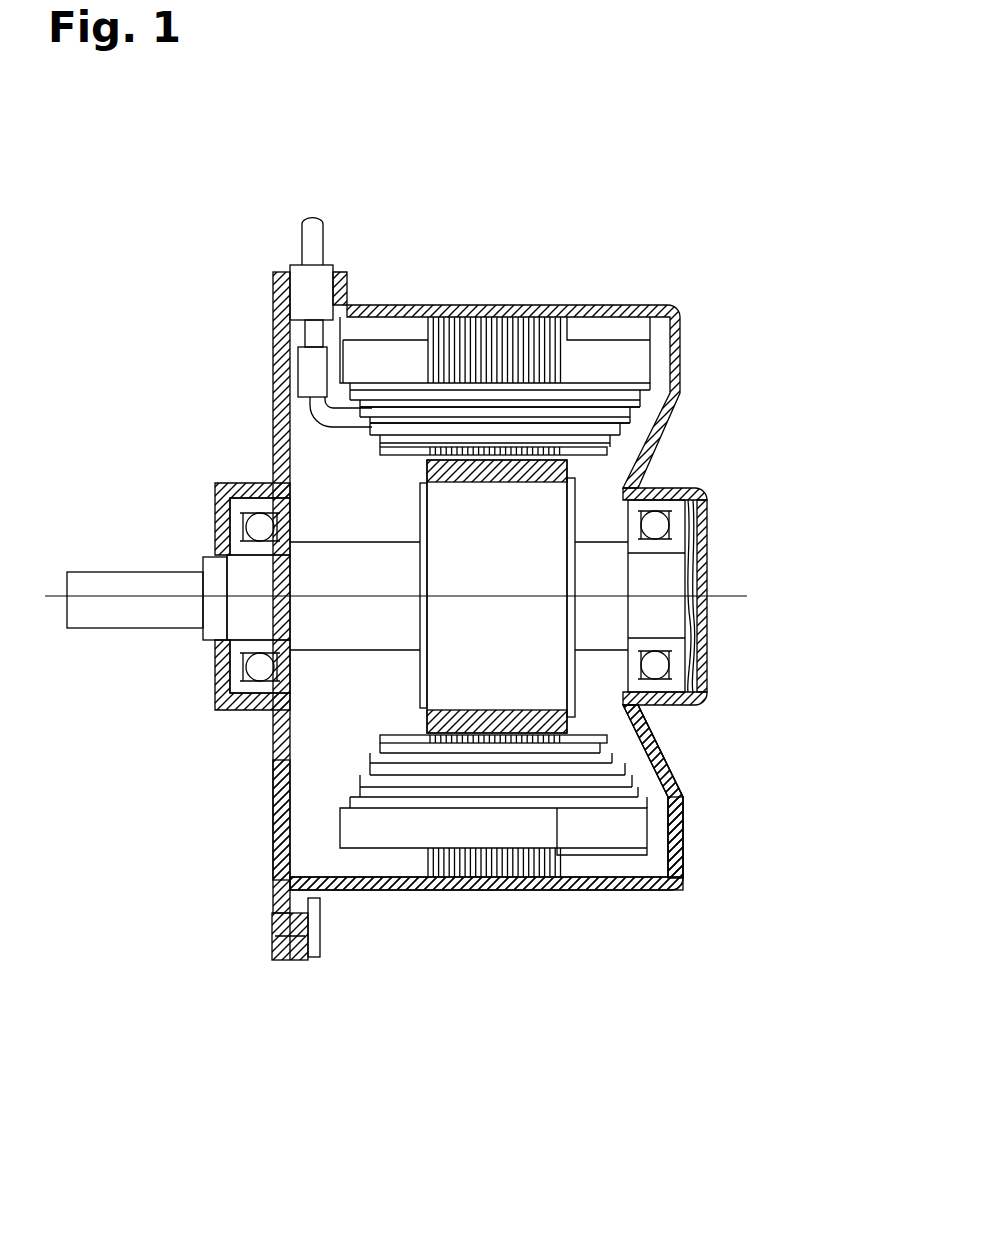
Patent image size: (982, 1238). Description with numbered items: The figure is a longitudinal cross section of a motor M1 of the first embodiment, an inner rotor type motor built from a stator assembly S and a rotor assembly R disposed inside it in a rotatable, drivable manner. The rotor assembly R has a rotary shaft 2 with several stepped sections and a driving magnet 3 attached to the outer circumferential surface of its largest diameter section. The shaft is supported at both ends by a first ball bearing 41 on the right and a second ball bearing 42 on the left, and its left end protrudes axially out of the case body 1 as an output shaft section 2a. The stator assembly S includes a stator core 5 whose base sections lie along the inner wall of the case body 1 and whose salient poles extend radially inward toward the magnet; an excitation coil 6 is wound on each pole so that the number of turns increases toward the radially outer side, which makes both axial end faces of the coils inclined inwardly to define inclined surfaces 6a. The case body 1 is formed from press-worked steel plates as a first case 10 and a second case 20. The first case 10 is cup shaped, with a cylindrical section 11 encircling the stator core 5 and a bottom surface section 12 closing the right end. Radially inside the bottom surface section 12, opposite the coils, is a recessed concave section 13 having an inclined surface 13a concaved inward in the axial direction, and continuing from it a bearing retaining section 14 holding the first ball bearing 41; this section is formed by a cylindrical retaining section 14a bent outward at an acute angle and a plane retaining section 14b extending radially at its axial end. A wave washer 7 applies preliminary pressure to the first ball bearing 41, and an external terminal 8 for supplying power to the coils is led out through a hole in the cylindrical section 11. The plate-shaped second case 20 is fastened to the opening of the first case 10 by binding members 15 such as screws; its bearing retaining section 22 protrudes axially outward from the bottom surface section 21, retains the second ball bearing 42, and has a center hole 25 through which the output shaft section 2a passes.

The case body 1 is at (385, 1052).
The rotary shaft 2 is at (497, 596).
The output shaft section 2a is at (110, 588).
The driving magnet 3 is at (425, 722).
The stator core 5 is at (530, 370).
The excitation coil 6 is at (637, 377).
The inclined surfaces 6a is at (627, 407).
The wave washer 7 is at (710, 615).
The external terminal 8 is at (300, 252).
The first case 10 is at (420, 890).
The cylindrical section 11 is at (513, 883).
The bottom surface section 12 is at (683, 843).
The recessed concave section 13 is at (670, 762).
The inclined surface 13a is at (657, 745).
The bearing retaining section 14 is at (754, 584).
The cylindrical retaining section 14a is at (662, 483).
The plane retaining section 14b is at (707, 520).
The binding members 15 is at (323, 922).
The second case 20 is at (290, 878).
The bottom surface section 21 is at (275, 827).
The bearing retaining section 22 is at (220, 502).
The center hole 25 is at (212, 555).
The first ball bearing 41 is at (700, 665).
The second ball bearing 42 is at (257, 668).
The motor M1 is at (185, 360).
The rotor assembly R is at (397, 517).
The stator assembly S is at (472, 551).